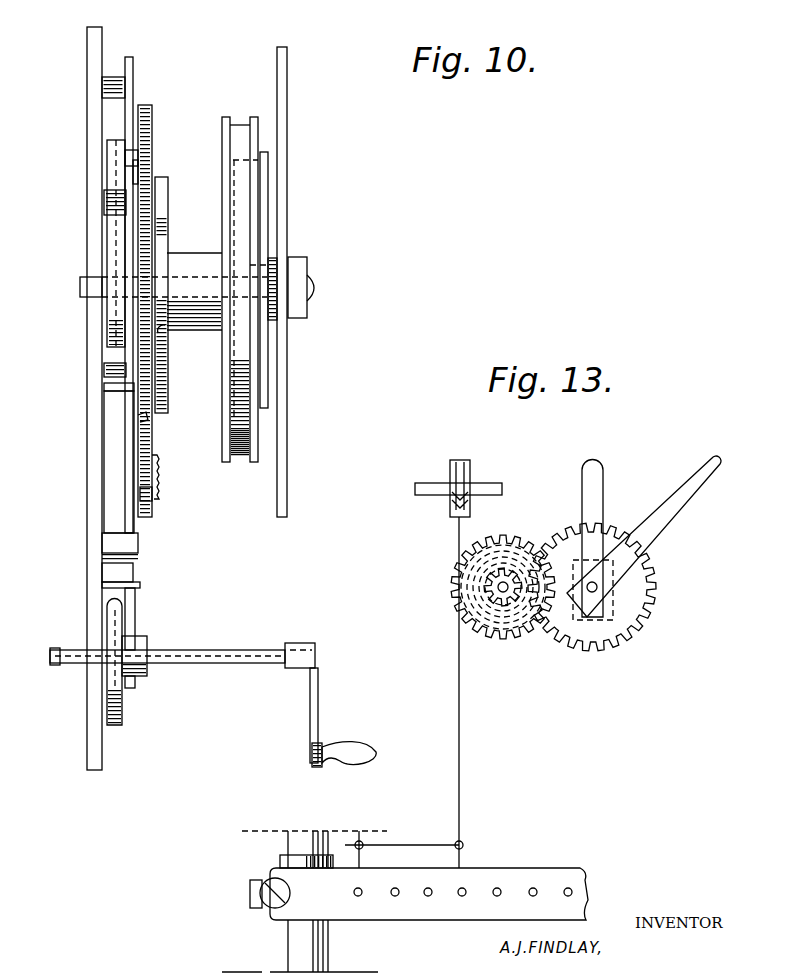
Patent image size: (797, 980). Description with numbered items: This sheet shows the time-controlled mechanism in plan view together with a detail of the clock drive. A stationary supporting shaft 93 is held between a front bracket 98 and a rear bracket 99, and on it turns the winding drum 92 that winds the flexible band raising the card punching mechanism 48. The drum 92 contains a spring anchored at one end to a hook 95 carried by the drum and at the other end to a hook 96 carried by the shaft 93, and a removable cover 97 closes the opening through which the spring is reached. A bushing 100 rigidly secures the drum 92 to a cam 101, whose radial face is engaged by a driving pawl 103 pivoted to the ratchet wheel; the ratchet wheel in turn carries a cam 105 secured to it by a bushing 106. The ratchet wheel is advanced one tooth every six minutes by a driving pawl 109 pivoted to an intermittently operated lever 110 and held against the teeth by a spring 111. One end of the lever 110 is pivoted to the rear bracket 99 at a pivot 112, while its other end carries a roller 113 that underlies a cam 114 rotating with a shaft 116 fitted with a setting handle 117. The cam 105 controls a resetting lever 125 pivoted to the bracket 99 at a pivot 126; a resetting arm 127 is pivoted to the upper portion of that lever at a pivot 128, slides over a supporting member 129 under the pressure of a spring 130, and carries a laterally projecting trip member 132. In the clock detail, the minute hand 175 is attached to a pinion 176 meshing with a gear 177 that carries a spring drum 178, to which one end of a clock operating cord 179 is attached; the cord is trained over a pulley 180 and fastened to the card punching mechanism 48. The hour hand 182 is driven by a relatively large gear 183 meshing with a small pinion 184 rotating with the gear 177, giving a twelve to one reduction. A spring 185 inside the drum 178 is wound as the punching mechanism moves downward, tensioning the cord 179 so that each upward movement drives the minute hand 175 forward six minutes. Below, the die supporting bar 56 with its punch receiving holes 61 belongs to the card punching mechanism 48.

In FIG. 10, the rear bracket 99 is at (102, 27).
In FIG. 10, the pivot 112 is at (100, 84).
In FIG. 10, the resetting lever 125 is at (130, 172).
In FIG. 10, the pivot 126 is at (104, 206).
In FIG. 10, the resetting arm 127 is at (136, 232).
In FIG. 10, the bushing 106 is at (118, 250).
In FIG. 10, the pivot 128 is at (152, 163).
In FIG. 10, the cam 101 is at (168, 195).
In FIG. 10, the driving pawl 103 is at (165, 240).
In FIG. 10, the trip member 132 is at (250, 265).
In FIG. 10, the bushing 100 is at (173, 291).
In FIG. 10, the cam 105 is at (118, 348).
In FIG. 10, the supporting member 129 is at (120, 378).
In FIG. 10, the spring 130 is at (146, 419).
In FIG. 10, the spring 111 is at (160, 488).
In FIG. 10, the driving pawl 109 is at (148, 504).
In FIG. 10, the intermittently operated lever 110 is at (138, 530).
In FIG. 10, the cam 114 is at (112, 618).
In FIG. 10, the roller 113 is at (113, 678).
In FIG. 10, the shaft 116 is at (215, 641).
In FIG. 10, the setting handle 117 is at (348, 735).
In FIG. 10, the winding drum 92 is at (233, 130).
In FIG. 10, the hook 95 is at (262, 437).
In FIG. 10, the hook 96 is at (270, 243).
In FIG. 10, the removable cover 97 is at (268, 172).
In FIG. 10, the front bracket 98 is at (287, 95).
In FIG. 10, the stationary supporting shaft 93 is at (320, 290).
In FIG. 13, the pulley 180 is at (462, 462).
In FIG. 13, the hour hand 182 is at (598, 468).
In FIG. 13, the minute hand 175 is at (690, 486).
In FIG. 13, the spring drum 178 is at (498, 548).
In FIG. 13, the gear 183 is at (648, 555).
In FIG. 13, the pinion 176 is at (626, 594).
In FIG. 13, the spring 185 is at (470, 590).
In FIG. 13, the pinion 184 is at (486, 604).
In FIG. 13, the gear 177 is at (512, 643).
In FIG. 13, the clock operating cord 179 is at (459, 694).
In FIG. 13, the card punching mechanism 48 is at (508, 864).
In FIG. 13, the die supporting bar 56 is at (577, 910).
In FIG. 13, the punch receiving holes 61 is at (430, 897).